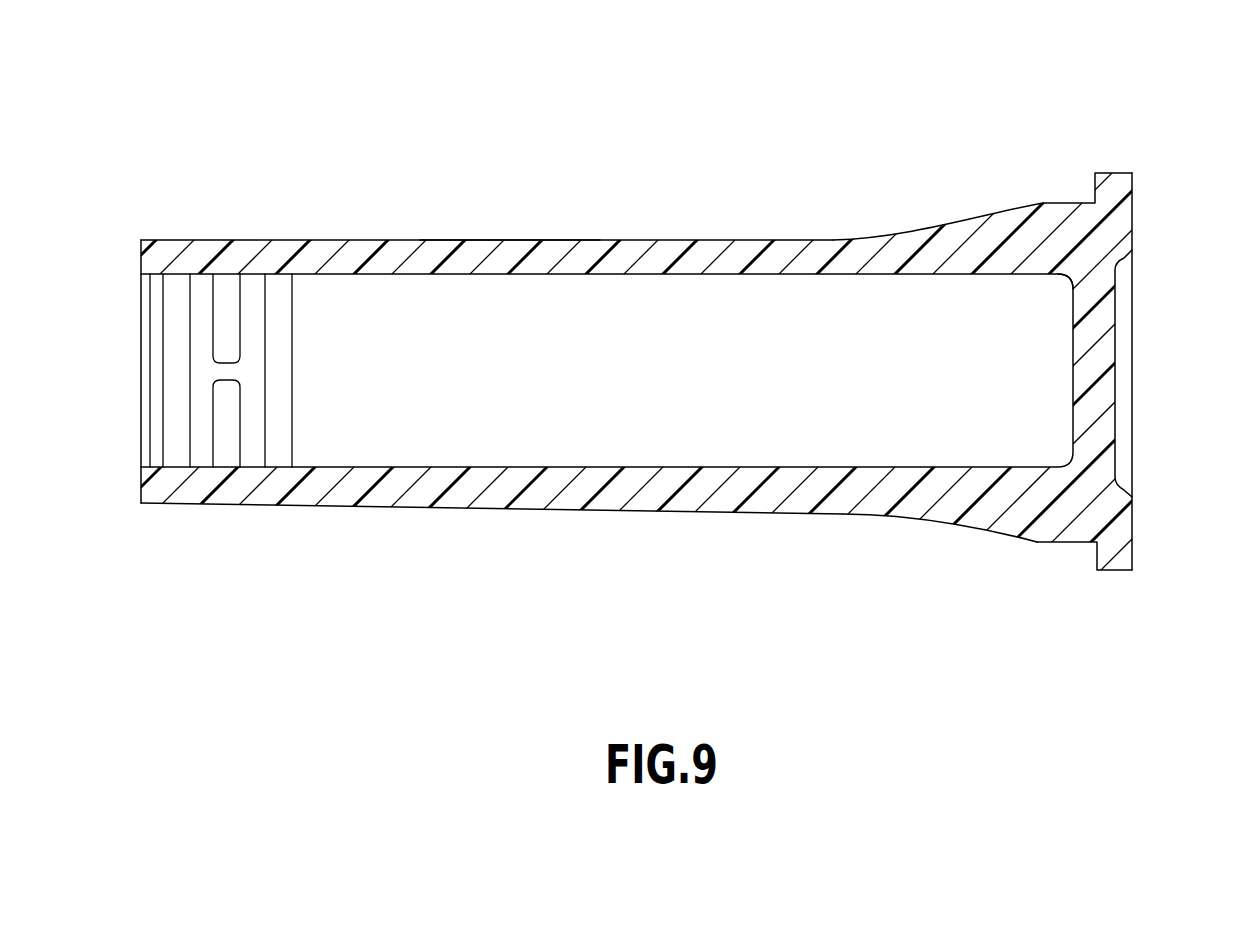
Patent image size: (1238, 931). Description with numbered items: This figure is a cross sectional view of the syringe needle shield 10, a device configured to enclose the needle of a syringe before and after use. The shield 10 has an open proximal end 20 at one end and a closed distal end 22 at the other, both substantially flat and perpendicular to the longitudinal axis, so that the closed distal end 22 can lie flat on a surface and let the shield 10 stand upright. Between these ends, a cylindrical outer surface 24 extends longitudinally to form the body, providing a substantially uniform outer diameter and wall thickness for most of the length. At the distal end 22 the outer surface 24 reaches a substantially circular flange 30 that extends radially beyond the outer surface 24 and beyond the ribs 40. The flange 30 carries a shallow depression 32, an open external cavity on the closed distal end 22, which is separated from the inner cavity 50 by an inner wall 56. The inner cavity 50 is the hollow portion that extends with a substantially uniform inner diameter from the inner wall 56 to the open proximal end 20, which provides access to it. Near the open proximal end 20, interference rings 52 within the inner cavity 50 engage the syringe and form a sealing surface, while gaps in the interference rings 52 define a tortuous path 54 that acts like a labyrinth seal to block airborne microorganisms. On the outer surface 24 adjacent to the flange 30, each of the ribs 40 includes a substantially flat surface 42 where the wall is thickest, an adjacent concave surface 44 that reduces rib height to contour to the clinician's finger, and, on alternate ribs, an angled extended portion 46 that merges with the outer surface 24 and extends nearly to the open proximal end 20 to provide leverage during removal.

The syringe needle shield 10 is at (180, 128).
The open proximal end 20 is at (141, 486).
The closed distal end 22 is at (1133, 542).
The cylindrical outer surface 24 is at (415, 507).
The flange 30 is at (1112, 570).
The shallow depression 32 is at (1122, 377).
The ribs 40 is at (1048, 182).
The substantially flat surface 42 is at (1072, 202).
The concave surface 44 is at (993, 527).
The extended portion 46 is at (827, 235).
The inner cavity 50 is at (492, 270).
The interference rings 52 is at (177, 328).
The tortuous path 54 is at (223, 372).
The inner wall 56 is at (1088, 290).